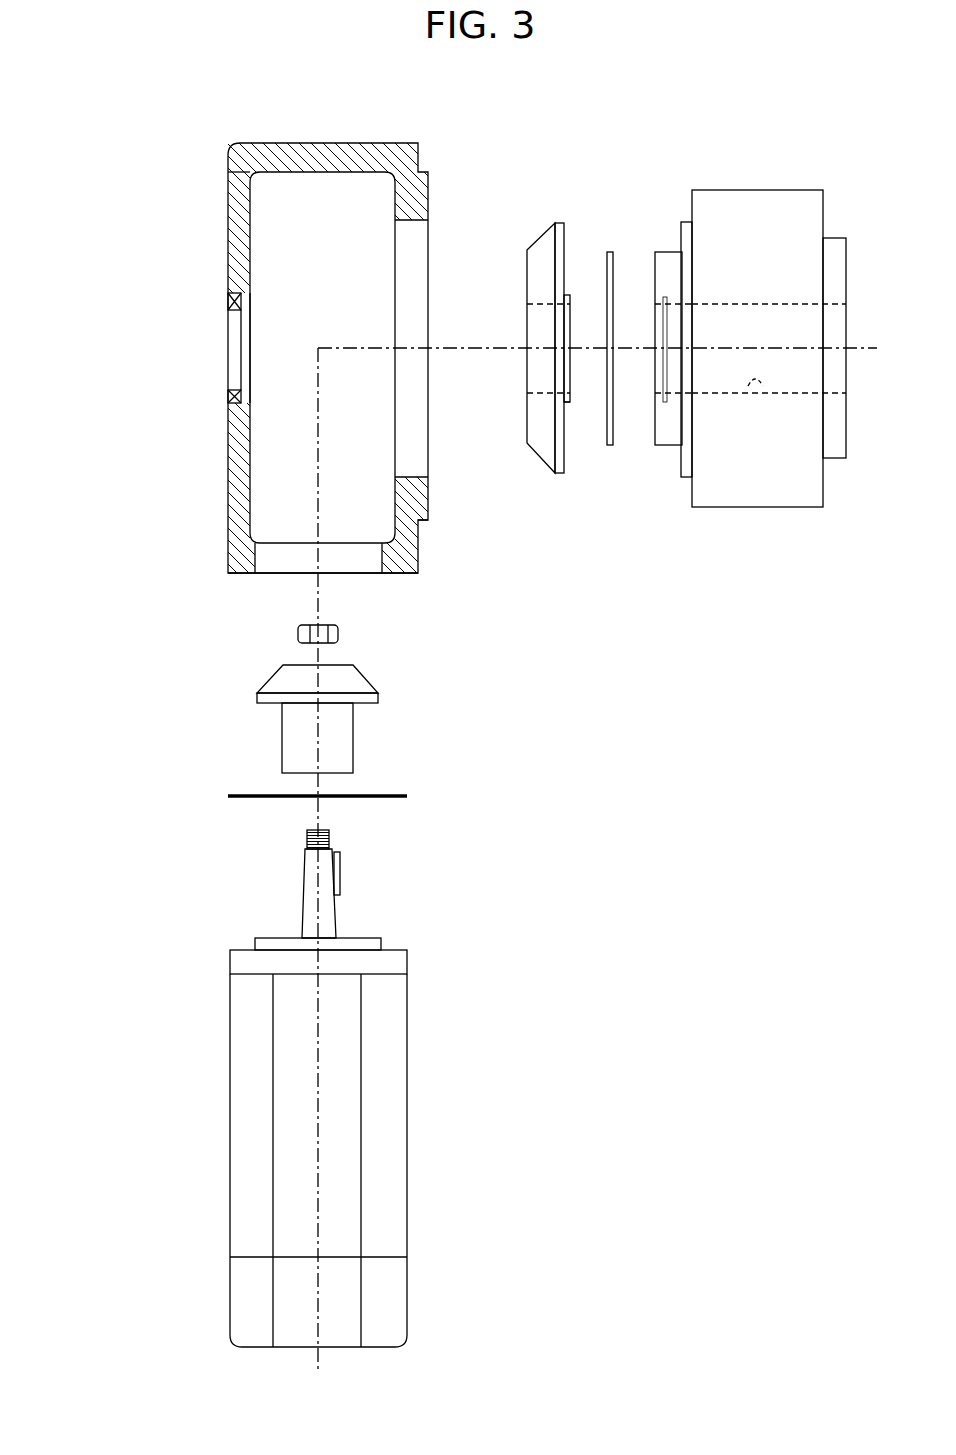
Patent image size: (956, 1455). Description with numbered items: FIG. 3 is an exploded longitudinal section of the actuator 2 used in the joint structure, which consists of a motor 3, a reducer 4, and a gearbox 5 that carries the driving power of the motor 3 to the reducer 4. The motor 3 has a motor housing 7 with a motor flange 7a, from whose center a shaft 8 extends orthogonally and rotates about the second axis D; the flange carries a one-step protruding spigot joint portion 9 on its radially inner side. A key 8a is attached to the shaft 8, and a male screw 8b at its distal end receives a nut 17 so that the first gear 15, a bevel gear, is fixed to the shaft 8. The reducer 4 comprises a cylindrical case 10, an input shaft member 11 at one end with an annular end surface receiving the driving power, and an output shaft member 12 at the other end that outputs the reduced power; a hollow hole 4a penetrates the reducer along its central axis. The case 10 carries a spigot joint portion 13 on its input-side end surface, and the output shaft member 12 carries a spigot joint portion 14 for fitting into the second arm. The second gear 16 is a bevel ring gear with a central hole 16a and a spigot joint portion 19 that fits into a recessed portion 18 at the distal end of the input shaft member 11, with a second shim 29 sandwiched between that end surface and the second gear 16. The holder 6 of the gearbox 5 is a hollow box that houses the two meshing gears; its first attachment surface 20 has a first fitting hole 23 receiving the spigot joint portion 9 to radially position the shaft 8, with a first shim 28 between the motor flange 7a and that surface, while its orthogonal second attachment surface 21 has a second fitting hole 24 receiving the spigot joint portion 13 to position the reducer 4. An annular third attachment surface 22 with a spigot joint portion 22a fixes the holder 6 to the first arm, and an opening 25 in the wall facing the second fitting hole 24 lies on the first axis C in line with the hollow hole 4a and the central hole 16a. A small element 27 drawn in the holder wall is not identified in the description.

The actuator 2 is at (108, 162).
The motor 3 is at (410, 1190).
The reducer 4 is at (780, 152).
The hollow hole 4a is at (762, 386).
The gearbox 5 is at (178, 268).
The holder 6 is at (225, 217).
The motor housing 7 is at (407, 1108).
The motor flange 7a is at (407, 952).
The shaft 8 is at (302, 884).
The key 8a is at (341, 876).
The male screw 8b is at (330, 841).
The spigot joint portion 9 is at (275, 938).
The case 10 is at (737, 190).
The input shaft member 11 is at (684, 232).
The output shaft member 12 is at (849, 432).
The spigot joint portion 13 is at (687, 222).
The spigot joint portion 14 is at (836, 458).
The first gear 15 is at (268, 683).
The second gear 16 is at (553, 228).
The central hole 16a is at (553, 390).
The nut 17 is at (340, 636).
The recessed portion 18 is at (657, 397).
The spigot joint portion 19 is at (567, 402).
The first attachment surface 20 is at (242, 575).
The second attachment surface 21 is at (428, 210).
The third attachment surface 22 is at (418, 155).
The spigot joint portion 22a is at (428, 525).
The first fitting hole 23 is at (381, 563).
The second fitting hole 24 is at (412, 474).
The opening 25 is at (248, 383).
The bearing 27 is at (228, 300).
The first shim 28 is at (228, 797).
The second shim 29 is at (610, 445).
The first axis C is at (470, 347).
The second axis D is at (318, 742).